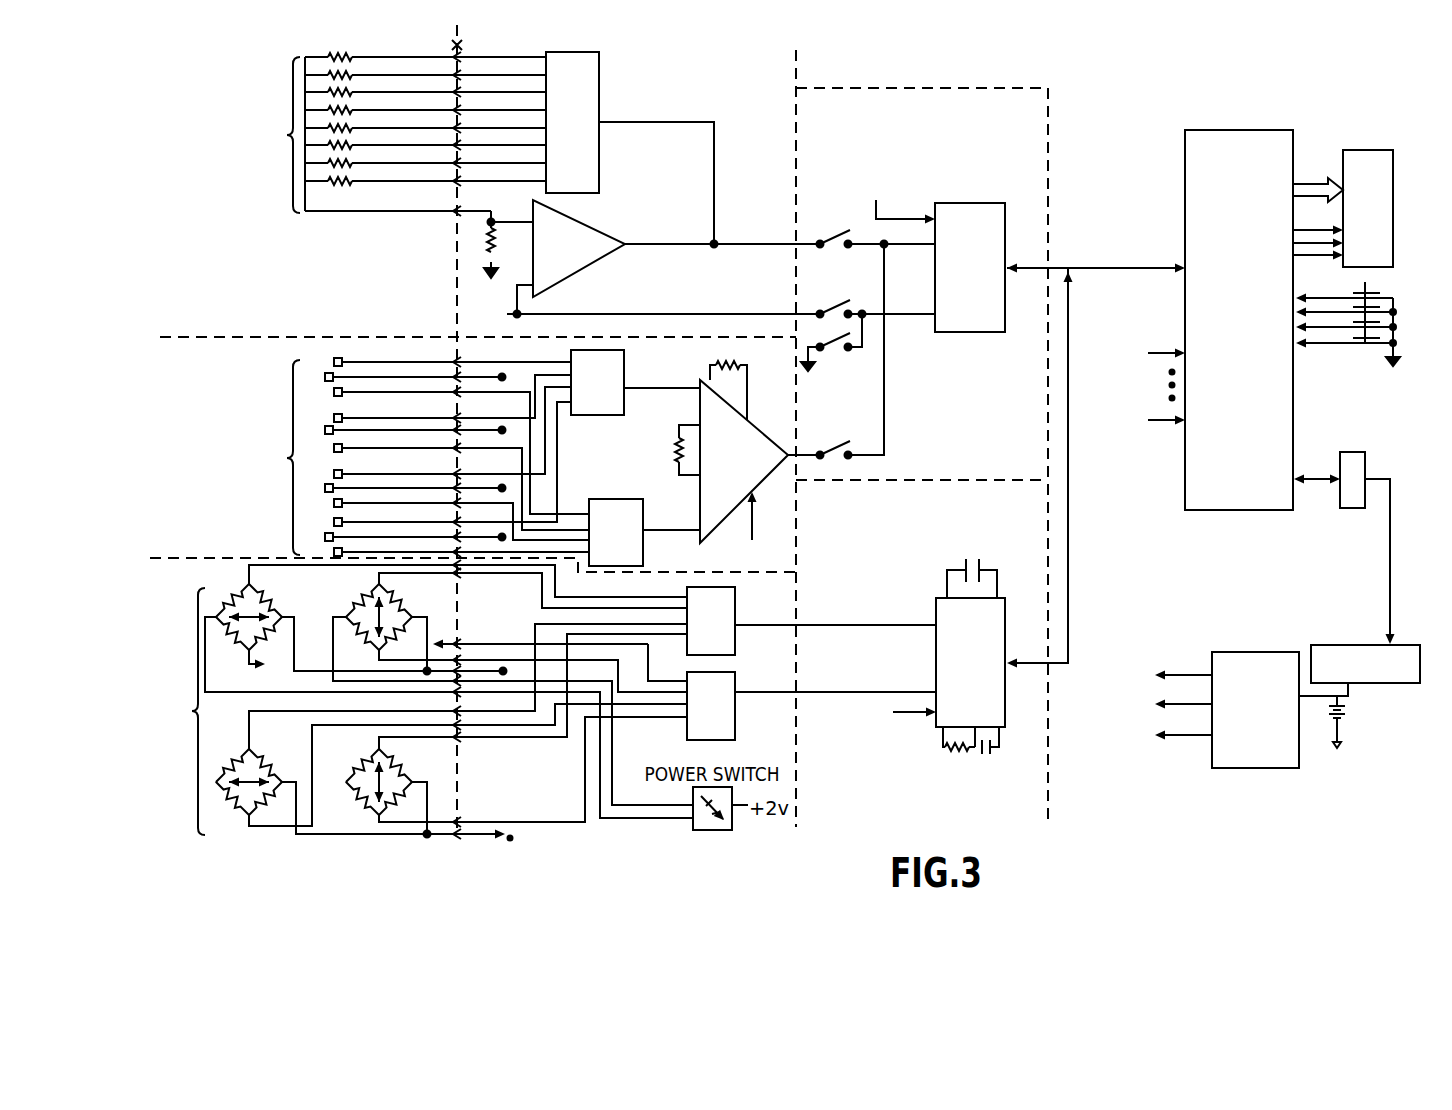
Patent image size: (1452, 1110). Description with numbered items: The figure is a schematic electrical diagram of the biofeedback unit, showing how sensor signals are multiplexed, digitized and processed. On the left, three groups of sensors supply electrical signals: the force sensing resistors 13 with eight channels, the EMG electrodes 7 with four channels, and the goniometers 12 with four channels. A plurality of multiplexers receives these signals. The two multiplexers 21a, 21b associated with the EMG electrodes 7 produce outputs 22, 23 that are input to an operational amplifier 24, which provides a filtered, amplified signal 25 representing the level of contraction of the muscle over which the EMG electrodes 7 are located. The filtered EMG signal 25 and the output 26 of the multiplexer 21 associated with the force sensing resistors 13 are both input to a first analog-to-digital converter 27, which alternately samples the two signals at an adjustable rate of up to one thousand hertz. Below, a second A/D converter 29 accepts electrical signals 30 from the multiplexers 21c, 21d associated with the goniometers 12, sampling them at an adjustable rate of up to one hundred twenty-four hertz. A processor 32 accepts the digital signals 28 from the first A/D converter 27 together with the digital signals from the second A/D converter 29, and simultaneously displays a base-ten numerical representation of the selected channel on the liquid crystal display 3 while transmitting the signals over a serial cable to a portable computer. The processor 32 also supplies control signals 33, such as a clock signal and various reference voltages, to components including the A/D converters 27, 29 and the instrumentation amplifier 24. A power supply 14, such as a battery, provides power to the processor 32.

The force sensing resistors 13 is at (290, 92).
The multiplexer 21 is at (599, 65).
The multiplexer output 26 is at (715, 168).
The EMG electrodes 7 is at (290, 405).
The multiplexer 21a is at (577, 416).
The multiplexer 21b is at (623, 499).
The multiplexer output 22 is at (680, 384).
The multiplexer output 23 is at (658, 533).
The operational amplifier 24 is at (765, 428).
The filtered EMG signal 25 is at (808, 452).
The first analog-to-digital converter 27 is at (980, 333).
The digital signals from the first A/D converter 28 is at (1100, 268).
The multiplexer 21c is at (735, 608).
The multiplexer 21d is at (735, 690).
The electrical signals 30 is at (858, 625).
The second A/D converter 29 is at (1007, 630).
The goniometers 12 is at (197, 640).
The processor 32 is at (1237, 131).
The liquid crystal display 3 is at (1368, 150).
The control signals 33 is at (1131, 380).
The power supply 14 is at (1237, 650).